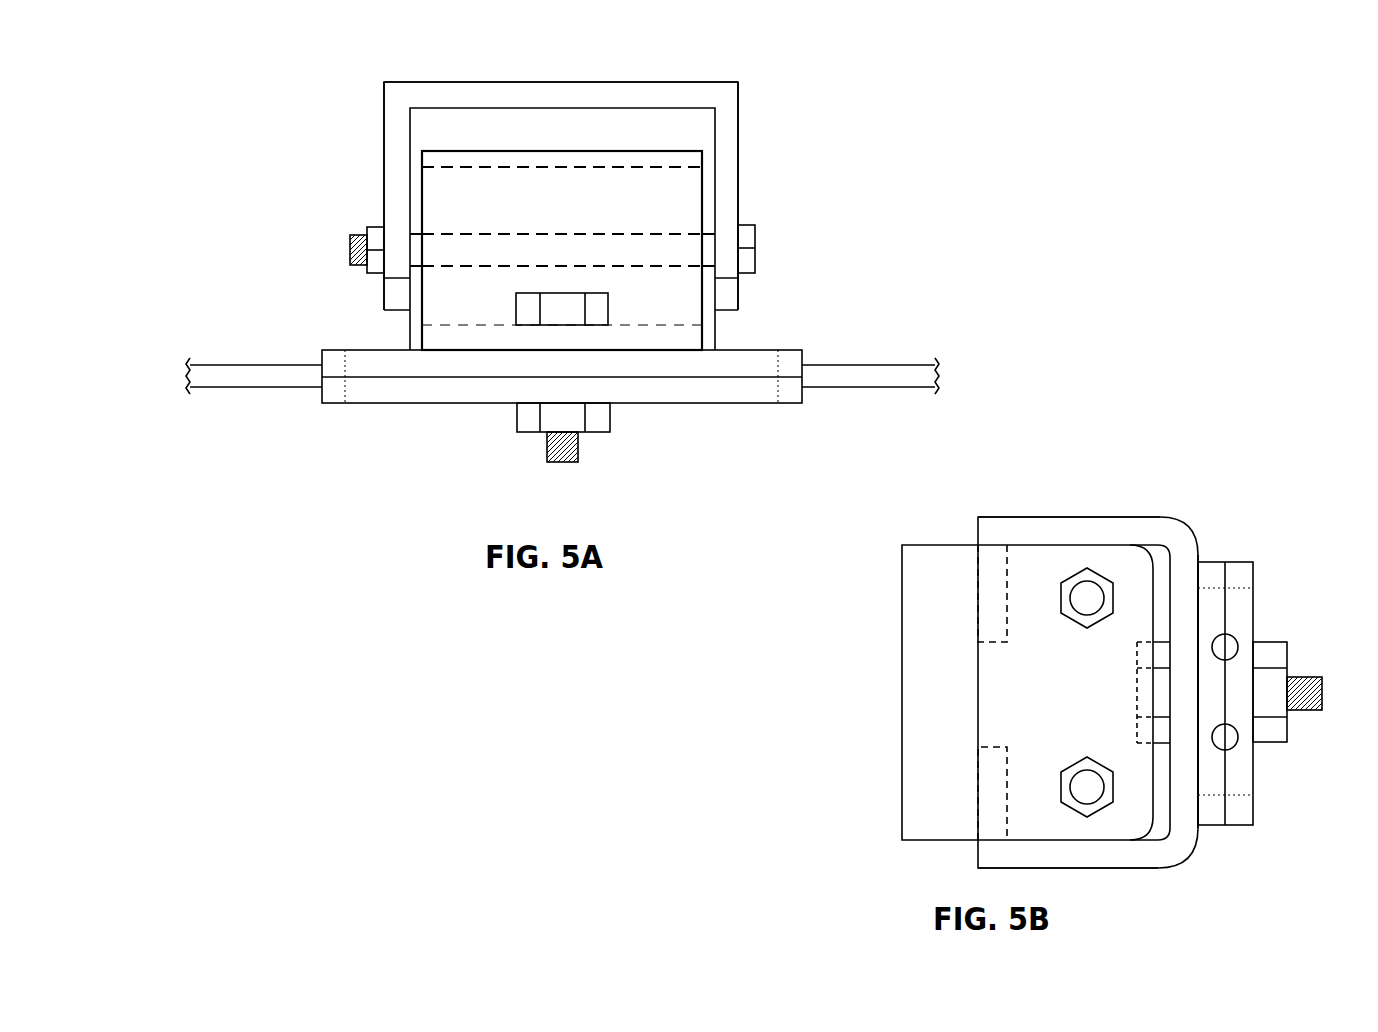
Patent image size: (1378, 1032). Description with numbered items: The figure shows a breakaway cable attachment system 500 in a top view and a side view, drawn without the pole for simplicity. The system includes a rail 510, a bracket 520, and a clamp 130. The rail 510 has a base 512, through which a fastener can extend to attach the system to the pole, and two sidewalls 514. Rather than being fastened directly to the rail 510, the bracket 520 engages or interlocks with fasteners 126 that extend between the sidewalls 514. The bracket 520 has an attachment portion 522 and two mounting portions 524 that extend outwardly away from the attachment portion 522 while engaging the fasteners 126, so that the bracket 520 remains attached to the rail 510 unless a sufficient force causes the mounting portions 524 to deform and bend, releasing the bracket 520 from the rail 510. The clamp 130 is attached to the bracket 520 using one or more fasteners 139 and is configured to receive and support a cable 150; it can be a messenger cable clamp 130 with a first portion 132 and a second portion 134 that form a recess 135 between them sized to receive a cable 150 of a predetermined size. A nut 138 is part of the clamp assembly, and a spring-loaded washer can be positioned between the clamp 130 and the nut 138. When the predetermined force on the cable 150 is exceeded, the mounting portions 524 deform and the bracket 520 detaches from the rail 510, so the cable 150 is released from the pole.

In FIG. 5A, the breakaway cable attachment system 500 is at (292, 102).
In FIG. 5B, the breakaway cable attachment system 500 is at (874, 516).
In FIG. 5A, the rail 510 is at (740, 82).
In FIG. 5B, the rail 510 is at (937, 545).
In FIG. 5A, the base 512 is at (593, 82).
In FIG. 5A, the sidewalls 514 is at (383, 160).
In FIG. 5A, the bracket 520 is at (702, 302).
In FIG. 5B, the bracket 520 is at (1173, 520).
In FIG. 5B, the attachment portion 522 is at (1172, 788).
In FIG. 5B, the mounting portions 524 is at (1117, 517).
In FIG. 5A, the fasteners 126 is at (755, 243).
In FIG. 5B, the fasteners 126 is at (1087, 628).
In FIG. 5A, the clamp 130 is at (388, 402).
In FIG. 5B, the clamp 130 is at (1253, 575).
In FIG. 5B, the first portion 132 is at (1203, 562).
In FIG. 5B, the second portion 134 is at (1228, 562).
In FIG. 5B, the recess 135 is at (1237, 745).
In FIG. 5A, the nut 138 is at (525, 432).
In FIG. 5B, the nut 138 is at (1270, 642).
In FIG. 5A, the fasteners 139 is at (568, 462).
In FIG. 5B, the fasteners 139 is at (1305, 677).
In FIG. 5A, the cable 150 is at (232, 388).